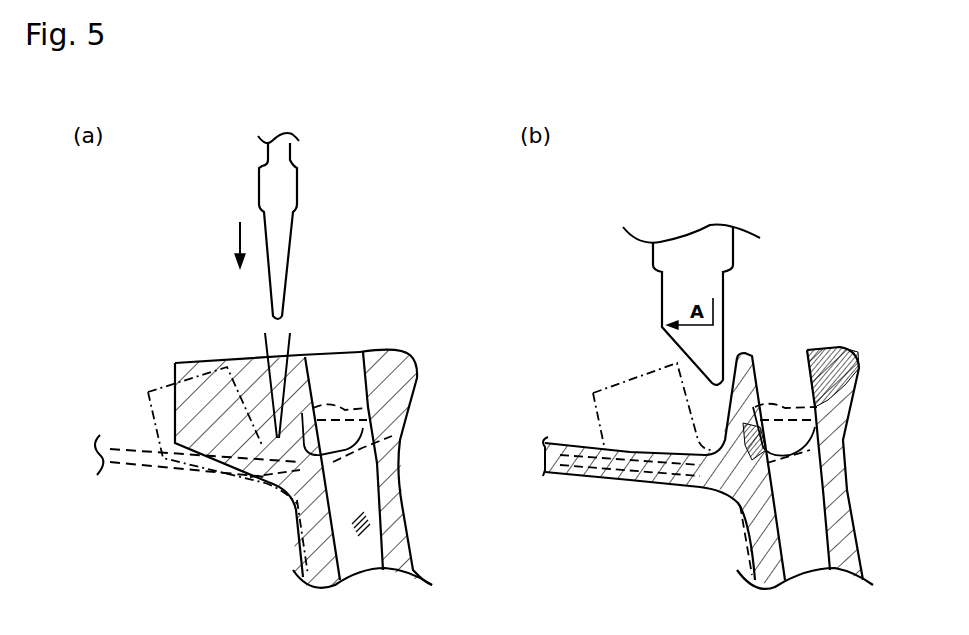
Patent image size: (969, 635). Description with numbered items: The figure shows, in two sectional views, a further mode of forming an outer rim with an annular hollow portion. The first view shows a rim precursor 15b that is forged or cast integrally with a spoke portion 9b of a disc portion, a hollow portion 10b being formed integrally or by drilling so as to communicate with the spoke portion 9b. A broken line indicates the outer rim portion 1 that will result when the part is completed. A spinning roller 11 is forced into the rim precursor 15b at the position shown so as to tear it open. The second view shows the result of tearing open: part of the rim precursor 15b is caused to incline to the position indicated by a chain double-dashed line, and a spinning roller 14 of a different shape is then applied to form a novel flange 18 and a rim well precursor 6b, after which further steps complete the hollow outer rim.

The outer rim portion 1 is at (294, 415).
The spinning roller 11 is at (283, 197).
The rim precursor 15b is at (209, 358).
The spoke portion 9b is at (397, 473).
The hollow portion 10b is at (370, 510).
The spinning roller 14 is at (715, 248).
The novel flange 18 is at (752, 347).
The rim well precursor 6b is at (680, 447).